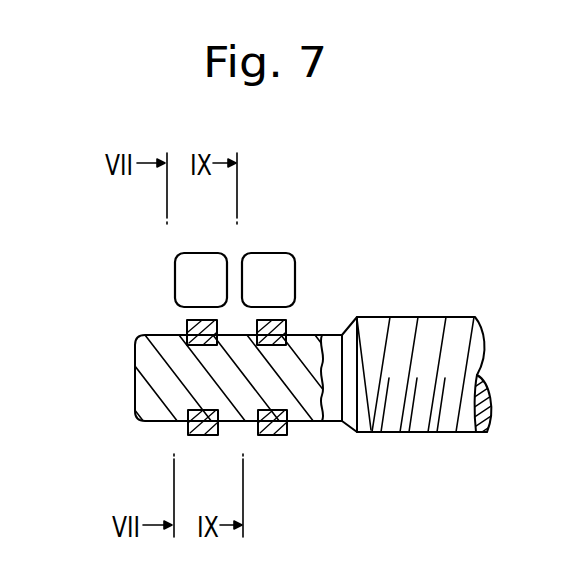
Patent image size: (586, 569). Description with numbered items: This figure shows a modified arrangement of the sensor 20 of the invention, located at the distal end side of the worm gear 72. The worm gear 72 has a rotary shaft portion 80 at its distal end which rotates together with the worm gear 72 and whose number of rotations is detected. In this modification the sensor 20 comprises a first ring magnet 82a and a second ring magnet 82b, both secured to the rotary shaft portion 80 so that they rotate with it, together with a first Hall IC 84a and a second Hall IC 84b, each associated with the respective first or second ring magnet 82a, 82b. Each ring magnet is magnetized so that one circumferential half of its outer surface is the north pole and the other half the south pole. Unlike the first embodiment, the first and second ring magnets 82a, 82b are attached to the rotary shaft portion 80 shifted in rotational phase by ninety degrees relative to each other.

The sensor 20 is at (114, 300).
The worm gear 72 is at (403, 317).
The rotary shaft portion 80 is at (133, 375).
The first ring magnet 82a is at (205, 437).
The second ring magnet 82b is at (275, 437).
The first Hall IC 84a is at (205, 253).
The second Hall IC 84b is at (297, 270).